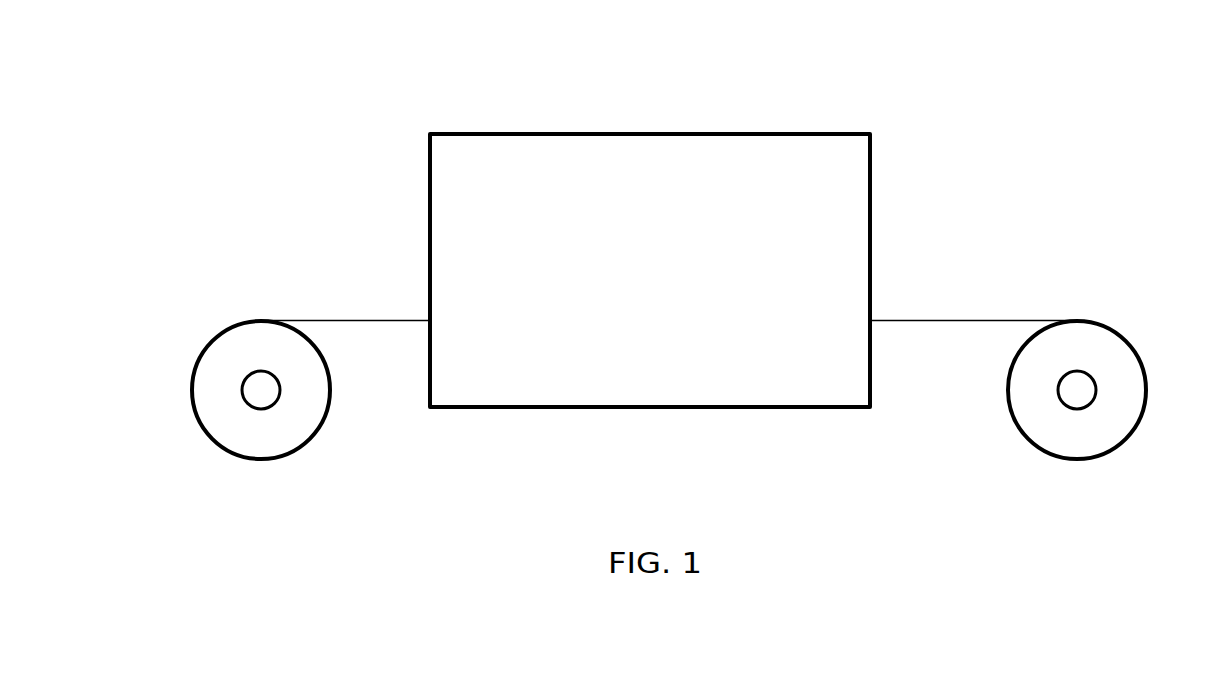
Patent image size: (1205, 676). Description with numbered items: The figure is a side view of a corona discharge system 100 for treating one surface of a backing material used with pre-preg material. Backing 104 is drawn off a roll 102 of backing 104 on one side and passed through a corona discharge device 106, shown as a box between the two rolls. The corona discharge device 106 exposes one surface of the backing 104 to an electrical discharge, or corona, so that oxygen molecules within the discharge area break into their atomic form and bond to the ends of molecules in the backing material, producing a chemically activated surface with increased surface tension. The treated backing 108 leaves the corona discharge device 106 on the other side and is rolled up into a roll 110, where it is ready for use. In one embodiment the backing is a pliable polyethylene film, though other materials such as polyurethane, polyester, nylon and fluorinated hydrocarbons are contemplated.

The corona discharge system 100 is at (1007, 135).
The roll 102 is at (238, 341).
The backing 104 is at (367, 320).
The corona discharge device 106 is at (463, 212).
The treated backing 108 is at (896, 320).
The roll 110 is at (1105, 339).